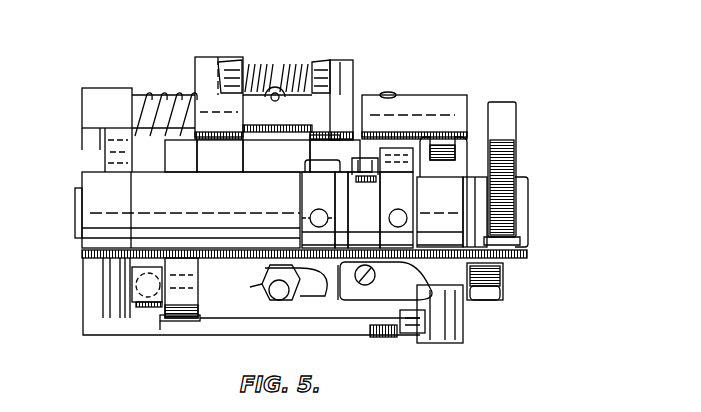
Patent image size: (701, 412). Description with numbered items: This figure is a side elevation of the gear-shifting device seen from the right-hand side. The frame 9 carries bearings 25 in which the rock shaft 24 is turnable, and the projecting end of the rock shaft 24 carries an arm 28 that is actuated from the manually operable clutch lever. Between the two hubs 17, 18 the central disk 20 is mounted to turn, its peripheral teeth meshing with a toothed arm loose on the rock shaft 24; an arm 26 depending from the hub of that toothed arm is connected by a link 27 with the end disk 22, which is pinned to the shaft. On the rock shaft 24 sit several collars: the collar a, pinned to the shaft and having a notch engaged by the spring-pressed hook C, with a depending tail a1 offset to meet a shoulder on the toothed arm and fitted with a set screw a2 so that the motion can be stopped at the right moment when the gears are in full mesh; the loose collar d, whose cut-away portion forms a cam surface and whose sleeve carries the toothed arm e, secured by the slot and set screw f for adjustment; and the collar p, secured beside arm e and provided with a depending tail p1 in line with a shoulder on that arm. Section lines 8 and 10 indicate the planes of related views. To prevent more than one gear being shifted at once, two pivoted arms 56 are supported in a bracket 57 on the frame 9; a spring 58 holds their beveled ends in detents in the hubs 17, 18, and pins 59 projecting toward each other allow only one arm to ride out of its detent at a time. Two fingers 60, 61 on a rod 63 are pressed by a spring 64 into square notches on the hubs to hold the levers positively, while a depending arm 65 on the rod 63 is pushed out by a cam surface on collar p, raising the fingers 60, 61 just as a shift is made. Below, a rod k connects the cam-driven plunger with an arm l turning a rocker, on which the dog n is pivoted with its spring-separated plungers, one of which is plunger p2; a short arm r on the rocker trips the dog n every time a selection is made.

The section line 8 is at (575, 193).
The frame 9 is at (417, 93).
The section line 10 is at (330, 60).
The hub 17 is at (335, 153).
The hub 18 is at (220, 156).
The central disk 20 is at (276, 156).
The end disk 22 is at (181, 156).
The rock shaft 24 is at (527, 220).
The bearings 25 is at (68, 275).
The arm 26 is at (182, 307).
The link 27 is at (142, 305).
The arm 28 is at (517, 132).
The pivoted arms 56 is at (232, 67).
The bracket 57 is at (155, 97).
The spring 58 is at (250, 72).
The pins 59 is at (265, 67).
The finger 60 is at (348, 85).
The finger 61 is at (198, 80).
The rod 63 is at (142, 115).
The spring 64 is at (301, 215).
The depending arm 65 is at (403, 137).
The slot and set screw f is at (382, 137).
The spring-pressed hook C is at (304, 158).
The collar a is at (318, 210).
The collar d is at (341, 210).
The toothed arm e is at (364, 210).
The collar p is at (357, 198).
The depending tail a1 is at (305, 290).
The set screw a2 is at (267, 293).
The depending tail p1 is at (378, 285).
The plunger p2 is at (338, 266).
The rod k is at (407, 332).
The arm l is at (423, 310).
The dog n is at (472, 300).
The short arm r is at (500, 283).